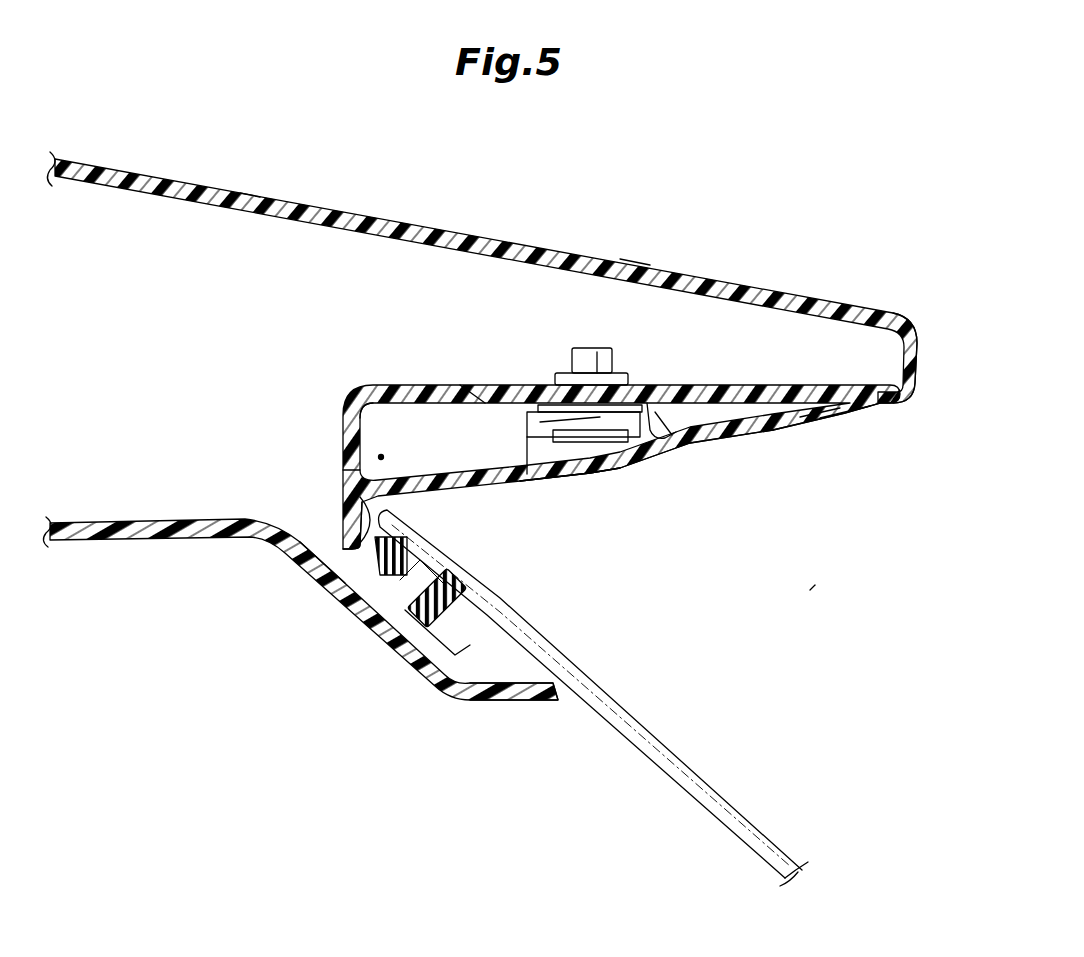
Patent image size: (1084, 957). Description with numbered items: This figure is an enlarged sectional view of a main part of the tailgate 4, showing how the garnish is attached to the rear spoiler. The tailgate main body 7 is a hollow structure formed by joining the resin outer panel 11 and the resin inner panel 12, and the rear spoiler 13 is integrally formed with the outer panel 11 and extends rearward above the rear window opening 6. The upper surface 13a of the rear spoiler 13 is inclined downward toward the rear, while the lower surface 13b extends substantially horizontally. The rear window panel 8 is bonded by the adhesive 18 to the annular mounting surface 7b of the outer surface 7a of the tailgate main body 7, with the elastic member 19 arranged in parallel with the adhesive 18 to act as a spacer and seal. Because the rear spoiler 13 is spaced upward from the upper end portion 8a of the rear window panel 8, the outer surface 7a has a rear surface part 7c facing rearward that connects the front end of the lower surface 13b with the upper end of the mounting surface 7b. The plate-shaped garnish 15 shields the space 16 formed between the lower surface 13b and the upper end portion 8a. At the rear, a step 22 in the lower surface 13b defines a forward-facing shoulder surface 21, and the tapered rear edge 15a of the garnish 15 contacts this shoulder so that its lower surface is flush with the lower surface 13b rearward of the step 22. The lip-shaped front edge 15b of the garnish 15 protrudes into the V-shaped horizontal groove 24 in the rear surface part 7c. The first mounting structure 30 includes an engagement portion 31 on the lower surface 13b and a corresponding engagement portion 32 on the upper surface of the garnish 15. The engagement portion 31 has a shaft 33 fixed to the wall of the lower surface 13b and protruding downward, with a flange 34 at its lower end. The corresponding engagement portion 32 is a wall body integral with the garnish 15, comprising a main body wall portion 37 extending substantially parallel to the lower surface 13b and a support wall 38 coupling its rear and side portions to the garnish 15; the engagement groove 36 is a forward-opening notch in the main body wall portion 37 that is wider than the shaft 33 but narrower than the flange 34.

The tailgate 4 is at (815, 585).
The rear window opening 6 is at (555, 702).
The tailgate main body 7 is at (362, 206).
The outer surface 7a is at (917, 368).
The mounting surface 7b is at (472, 628).
The rear surface part 7c is at (366, 444).
The rear window panel 8 is at (720, 803).
The upper end portion 8a is at (388, 518).
The outer panel 11 is at (252, 197).
The inner panel 12 is at (138, 541).
The rear spoiler 13 is at (843, 314).
The upper surface 13a is at (637, 264).
The lower surface 13b is at (472, 403).
The garnish 15 is at (625, 470).
The rear edge 15a is at (850, 414).
The front edge 15b is at (345, 477).
The space 16 is at (347, 447).
The adhesive 18 is at (432, 610).
The elastic member 19 is at (372, 588).
The forward-facing shoulder surface 21 is at (822, 410).
The step 22 is at (882, 422).
The horizontal groove 24 is at (340, 568).
The first mounting structure 30 is at (594, 488).
The engagement portion 31 is at (570, 343).
The corresponding engagement portion 32 is at (674, 428).
The shaft 33 is at (538, 430).
The flange 34 is at (572, 444).
The engagement groove 36 is at (606, 406).
The main body wall portion 37 is at (648, 422).
The support wall 38 is at (528, 458).